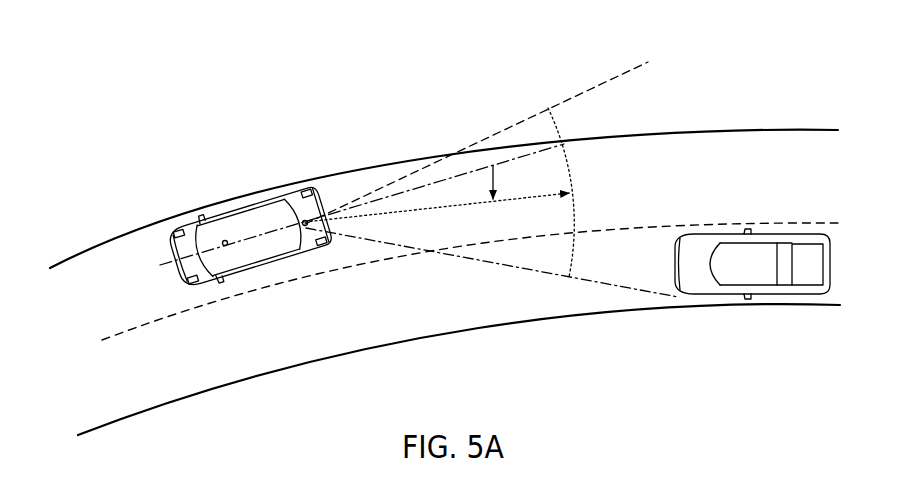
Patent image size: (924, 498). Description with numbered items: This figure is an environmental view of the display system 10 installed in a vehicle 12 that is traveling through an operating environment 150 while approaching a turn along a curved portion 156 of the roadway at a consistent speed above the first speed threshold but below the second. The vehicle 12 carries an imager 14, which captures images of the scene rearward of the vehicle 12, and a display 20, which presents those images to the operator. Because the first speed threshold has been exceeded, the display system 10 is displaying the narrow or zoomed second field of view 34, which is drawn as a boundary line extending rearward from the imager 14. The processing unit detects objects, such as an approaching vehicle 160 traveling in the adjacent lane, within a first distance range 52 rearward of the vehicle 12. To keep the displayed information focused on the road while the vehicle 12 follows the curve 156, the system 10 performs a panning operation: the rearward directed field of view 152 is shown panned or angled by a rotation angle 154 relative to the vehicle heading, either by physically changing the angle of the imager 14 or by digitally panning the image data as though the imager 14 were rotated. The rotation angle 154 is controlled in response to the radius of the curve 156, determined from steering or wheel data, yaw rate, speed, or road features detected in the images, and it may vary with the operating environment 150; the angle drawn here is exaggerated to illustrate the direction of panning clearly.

The display system 10 is at (303, 165).
The vehicle 12 is at (197, 232).
The imager 14 is at (306, 227).
The display 20 is at (225, 241).
The second field of view 34 is at (580, 92).
The first distance range 52 is at (404, 213).
The operating environment 150 is at (796, 80).
The rearward directed field of view 152 is at (700, 173).
The rotation angle 154 is at (494, 181).
The curved portion of roadway 156 is at (416, 339).
The approaching vehicle 160 is at (768, 234).